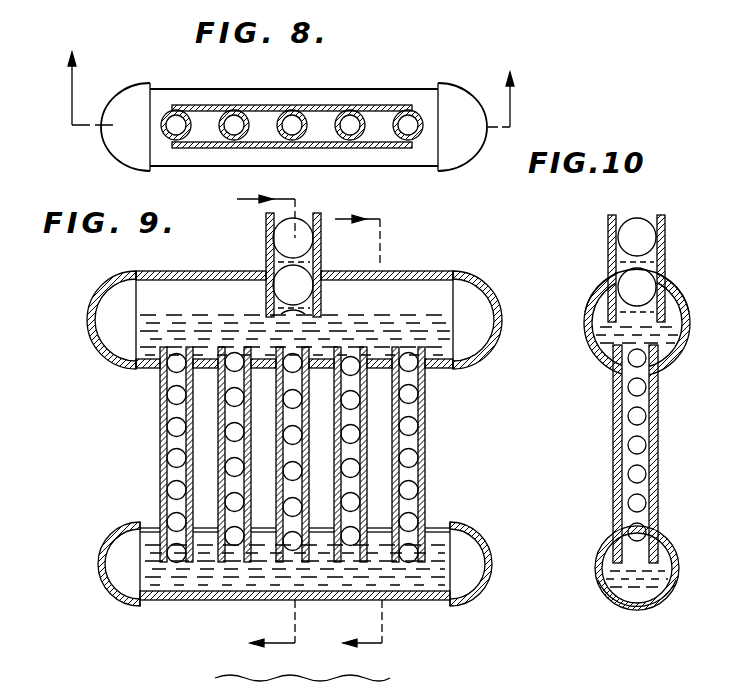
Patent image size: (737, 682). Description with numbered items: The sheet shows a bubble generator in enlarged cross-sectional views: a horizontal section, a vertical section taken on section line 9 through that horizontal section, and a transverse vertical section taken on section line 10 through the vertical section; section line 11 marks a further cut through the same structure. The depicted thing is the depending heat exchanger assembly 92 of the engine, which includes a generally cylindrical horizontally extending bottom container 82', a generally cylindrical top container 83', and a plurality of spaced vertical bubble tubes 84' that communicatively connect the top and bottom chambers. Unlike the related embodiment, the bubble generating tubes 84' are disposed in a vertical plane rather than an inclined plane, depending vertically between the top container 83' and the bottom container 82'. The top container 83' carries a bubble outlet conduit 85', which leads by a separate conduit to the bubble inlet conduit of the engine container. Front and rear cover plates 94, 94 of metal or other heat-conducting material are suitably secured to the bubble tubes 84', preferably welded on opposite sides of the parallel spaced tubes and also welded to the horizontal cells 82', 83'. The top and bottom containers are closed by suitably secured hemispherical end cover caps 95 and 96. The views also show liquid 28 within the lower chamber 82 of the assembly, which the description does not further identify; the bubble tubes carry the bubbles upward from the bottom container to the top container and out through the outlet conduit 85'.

In FIG. 8, the section line 9— 9 is at (290, 98).
In FIG. 9, the section line 10— 10 is at (286, 417).
In FIG. 9, the section line 11- 11 is at (380, 427).
In FIG. 9, the liquid refrigerant 28 is at (182, 582).
In FIG. 10, the liquid refrigerant 28 is at (640, 583).
In FIG. 9, the lower header 82 is at (309, 596).
In FIG. 8, the bottom container 82' is at (299, 105).
In FIG. 10, the bottom container 82' is at (661, 568).
In FIG. 9, the top container 83' is at (316, 289).
In FIG. 10, the top container 83' is at (660, 323).
In FIG. 8, the bubble tubes 84' is at (292, 155).
In FIG. 9, the bubble tubes 84' is at (327, 455).
In FIG. 10, the bubble tubes 84' is at (676, 445).
In FIG. 9, the bubble outlet conduit 85' is at (266, 265).
In FIG. 10, the bubble outlet conduit 85' is at (667, 268).
In FIG. 9, the heat exchanger assembly 92 is at (293, 438).
In FIG. 8, the cover plates 94 is at (325, 107).
In FIG. 10, the cover plates 94 is at (657, 437).
In FIG. 9, the end cover cap 95 is at (88, 323).
In FIG. 10, the end cover cap 95 is at (677, 300).
In FIG. 8, the end cover cap 96 is at (118, 150).
In FIG. 9, the end cover cap 96 is at (100, 568).
In FIG. 10, the end cover cap 96 is at (593, 567).